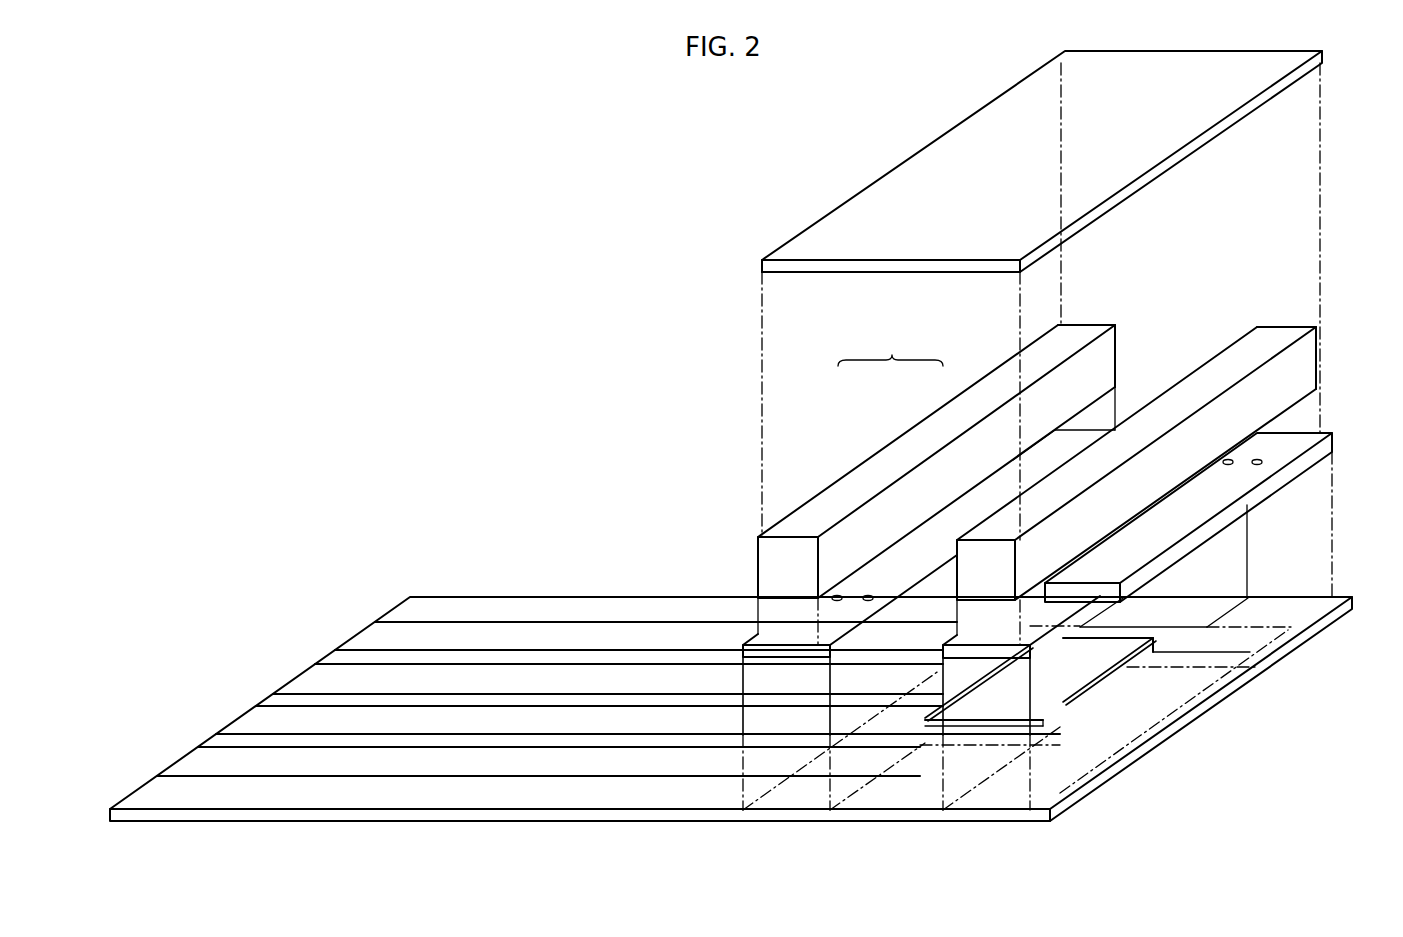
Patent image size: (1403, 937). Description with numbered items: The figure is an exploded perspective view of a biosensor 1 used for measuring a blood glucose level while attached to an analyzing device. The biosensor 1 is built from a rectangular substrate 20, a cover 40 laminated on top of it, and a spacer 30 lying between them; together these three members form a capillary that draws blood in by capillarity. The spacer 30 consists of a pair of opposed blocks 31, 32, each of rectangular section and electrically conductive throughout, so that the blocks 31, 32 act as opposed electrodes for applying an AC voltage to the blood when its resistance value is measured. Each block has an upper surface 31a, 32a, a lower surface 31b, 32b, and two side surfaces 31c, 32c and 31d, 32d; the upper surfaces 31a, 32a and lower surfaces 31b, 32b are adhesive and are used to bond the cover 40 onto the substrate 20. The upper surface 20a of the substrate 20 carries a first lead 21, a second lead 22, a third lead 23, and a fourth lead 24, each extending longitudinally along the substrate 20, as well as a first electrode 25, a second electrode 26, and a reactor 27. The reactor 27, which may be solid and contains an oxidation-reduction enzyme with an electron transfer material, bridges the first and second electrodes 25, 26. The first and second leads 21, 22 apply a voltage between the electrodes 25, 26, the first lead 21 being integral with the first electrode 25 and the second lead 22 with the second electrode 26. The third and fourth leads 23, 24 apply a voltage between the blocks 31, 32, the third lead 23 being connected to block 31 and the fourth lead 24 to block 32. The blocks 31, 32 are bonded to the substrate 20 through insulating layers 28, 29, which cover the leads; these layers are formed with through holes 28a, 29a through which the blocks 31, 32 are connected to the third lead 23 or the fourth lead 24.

The biosensor 1 is at (624, 478).
The substrate 20 is at (686, 824).
The upper surface 20a is at (886, 806).
The first lead 21 is at (540, 722).
The second lead 22 is at (600, 685).
The third lead 23 is at (500, 765).
The fourth lead 24 is at (652, 637).
The first electrode 25 is at (1060, 723).
The second electrode 26 is at (1115, 680).
The reactor 27 is at (1008, 710).
The insulating layer 28 is at (785, 627).
The through hole 28a is at (842, 596).
The insulating layer 29 is at (1298, 465).
The through hole 29a is at (1257, 470).
The spacer 30 is at (890, 343).
The block 31 is at (878, 476).
The upper surface 31a is at (1085, 330).
The lower surface 31b is at (938, 516).
The side surface 31c is at (1105, 355).
The side surface 31d is at (758, 558).
The block 32 is at (1070, 484).
The upper surface 32a is at (1230, 342).
The lower surface 32b is at (1077, 560).
The side surface 32c is at (1135, 402).
The side surface 32d is at (1300, 370).
The cover 40 is at (1012, 108).